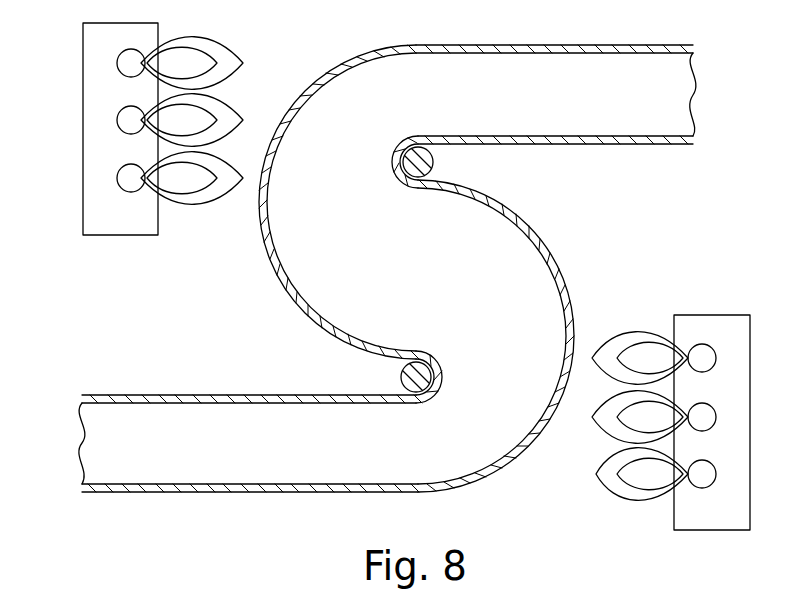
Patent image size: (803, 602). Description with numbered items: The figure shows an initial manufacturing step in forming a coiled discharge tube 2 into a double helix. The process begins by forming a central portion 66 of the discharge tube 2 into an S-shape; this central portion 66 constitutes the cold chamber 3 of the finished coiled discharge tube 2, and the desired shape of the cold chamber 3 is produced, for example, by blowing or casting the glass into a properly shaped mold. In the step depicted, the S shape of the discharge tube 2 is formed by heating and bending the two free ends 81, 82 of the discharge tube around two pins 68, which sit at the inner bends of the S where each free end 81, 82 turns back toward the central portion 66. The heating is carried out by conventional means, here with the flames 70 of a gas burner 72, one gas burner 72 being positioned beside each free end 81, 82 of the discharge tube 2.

The discharge tube 2 is at (386, 316).
The cold chamber 3 is at (440, 268).
The central portion 66 is at (262, 296).
The pins 68 is at (400, 370).
The flames 70 is at (200, 205).
The gas burner 72 is at (117, 228).
The free end 81 is at (670, 143).
The free end 82 is at (215, 493).